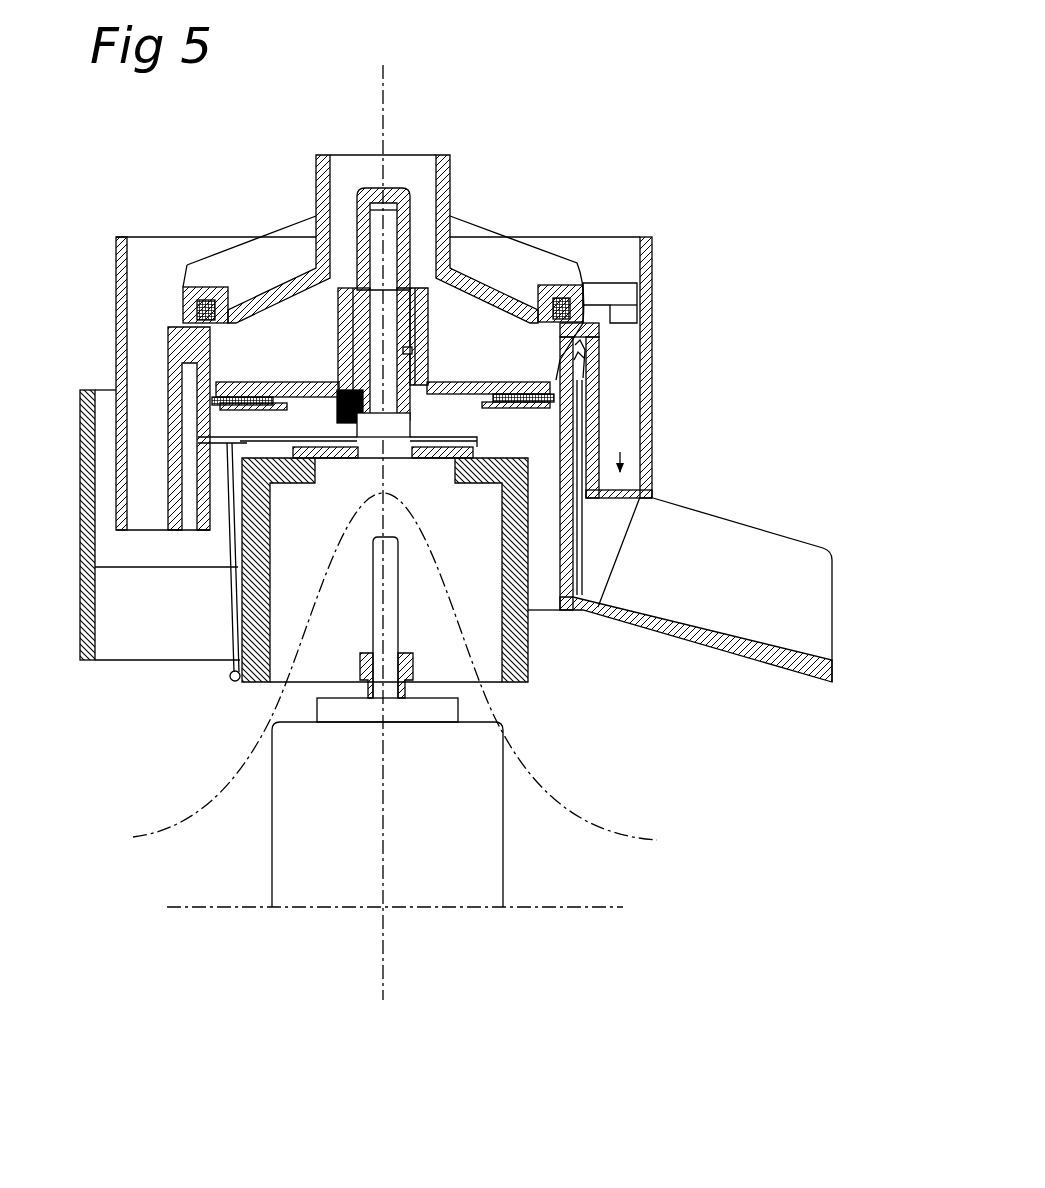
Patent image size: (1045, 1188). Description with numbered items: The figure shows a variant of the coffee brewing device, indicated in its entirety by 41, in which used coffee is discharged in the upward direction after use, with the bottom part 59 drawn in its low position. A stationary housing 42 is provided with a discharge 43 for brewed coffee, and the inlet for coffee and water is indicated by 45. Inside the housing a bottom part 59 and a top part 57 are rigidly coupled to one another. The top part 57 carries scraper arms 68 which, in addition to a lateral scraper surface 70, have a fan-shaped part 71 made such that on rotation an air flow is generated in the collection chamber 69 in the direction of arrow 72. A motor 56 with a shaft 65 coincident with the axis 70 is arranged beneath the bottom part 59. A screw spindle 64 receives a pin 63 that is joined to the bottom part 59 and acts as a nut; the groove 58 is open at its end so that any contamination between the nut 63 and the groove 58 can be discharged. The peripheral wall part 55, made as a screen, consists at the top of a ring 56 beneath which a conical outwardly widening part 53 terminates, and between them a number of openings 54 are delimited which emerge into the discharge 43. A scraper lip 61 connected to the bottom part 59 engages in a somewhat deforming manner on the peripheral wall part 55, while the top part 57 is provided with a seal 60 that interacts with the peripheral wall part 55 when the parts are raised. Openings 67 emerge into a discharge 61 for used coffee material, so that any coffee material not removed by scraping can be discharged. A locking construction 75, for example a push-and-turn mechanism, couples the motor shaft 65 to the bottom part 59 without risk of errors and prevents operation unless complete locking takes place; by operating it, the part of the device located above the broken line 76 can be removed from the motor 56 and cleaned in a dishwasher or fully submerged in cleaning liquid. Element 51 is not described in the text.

The device 41 is at (66, 453).
The stationary housing 42 is at (82, 558).
The discharge 43 is at (792, 576).
The inlet 45 is at (418, 198).
The cylinder 51 is at (178, 364).
The conical outwardly widening part 53 is at (598, 380).
The openings 54 is at (600, 360).
The peripheral wall part 55 is at (597, 412).
The motor 56 is at (593, 330).
The top part 57 is at (432, 340).
The groove 58 is at (490, 388).
The bottom part 59 is at (533, 253).
The seal 60 is at (198, 310).
The scraper lip 61 is at (142, 635).
The pin 63 is at (342, 400).
The screw spindle 64 is at (403, 350).
The shaft 65 is at (379, 608).
The openings 67 is at (222, 436).
The scraper arms 68 is at (615, 275).
The collection chamber 69 is at (628, 467).
The axis 70 is at (637, 297).
The fan-shaped part 71 is at (623, 313).
The arrow 72 is at (598, 607).
The locking construction 75 is at (233, 588).
The broken line 76 is at (207, 808).